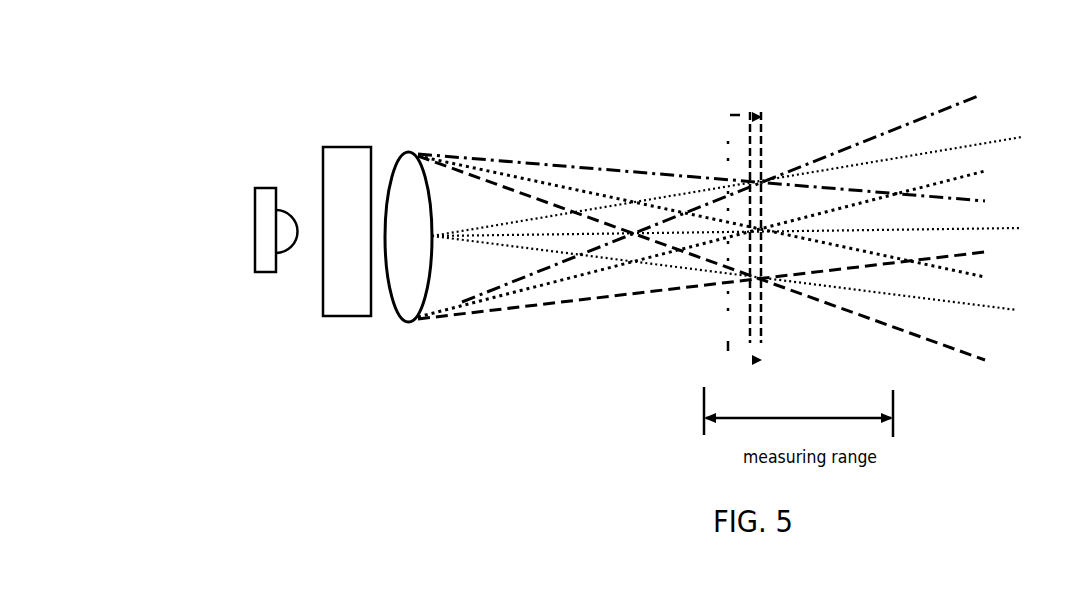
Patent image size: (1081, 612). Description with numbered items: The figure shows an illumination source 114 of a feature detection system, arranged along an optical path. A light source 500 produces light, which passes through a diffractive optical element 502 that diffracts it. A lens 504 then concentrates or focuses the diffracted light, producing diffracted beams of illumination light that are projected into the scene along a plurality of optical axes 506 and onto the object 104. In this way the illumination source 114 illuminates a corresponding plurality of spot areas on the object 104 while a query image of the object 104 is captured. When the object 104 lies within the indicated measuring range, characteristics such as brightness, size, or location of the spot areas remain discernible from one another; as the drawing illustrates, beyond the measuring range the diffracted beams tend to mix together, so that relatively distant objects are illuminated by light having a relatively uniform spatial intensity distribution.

The illumination source 114 is at (350, 45).
The light source 500 is at (254, 228).
The diffractive optical element 502 is at (327, 147).
The lens 504 is at (408, 152).
The object 104 is at (763, 130).
The optical axes 506 is at (998, 136).